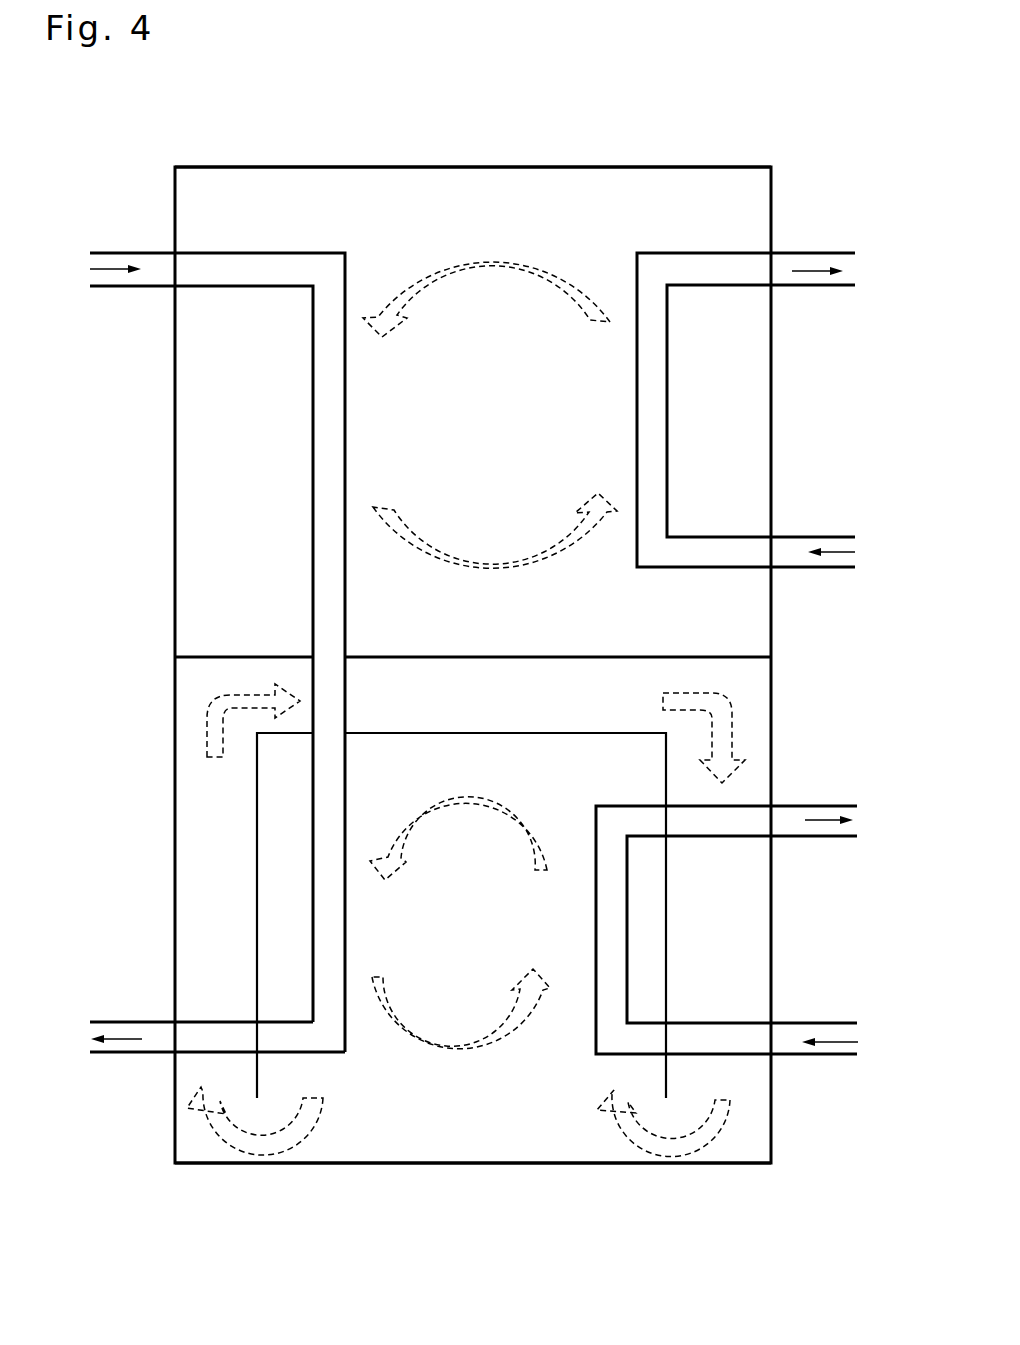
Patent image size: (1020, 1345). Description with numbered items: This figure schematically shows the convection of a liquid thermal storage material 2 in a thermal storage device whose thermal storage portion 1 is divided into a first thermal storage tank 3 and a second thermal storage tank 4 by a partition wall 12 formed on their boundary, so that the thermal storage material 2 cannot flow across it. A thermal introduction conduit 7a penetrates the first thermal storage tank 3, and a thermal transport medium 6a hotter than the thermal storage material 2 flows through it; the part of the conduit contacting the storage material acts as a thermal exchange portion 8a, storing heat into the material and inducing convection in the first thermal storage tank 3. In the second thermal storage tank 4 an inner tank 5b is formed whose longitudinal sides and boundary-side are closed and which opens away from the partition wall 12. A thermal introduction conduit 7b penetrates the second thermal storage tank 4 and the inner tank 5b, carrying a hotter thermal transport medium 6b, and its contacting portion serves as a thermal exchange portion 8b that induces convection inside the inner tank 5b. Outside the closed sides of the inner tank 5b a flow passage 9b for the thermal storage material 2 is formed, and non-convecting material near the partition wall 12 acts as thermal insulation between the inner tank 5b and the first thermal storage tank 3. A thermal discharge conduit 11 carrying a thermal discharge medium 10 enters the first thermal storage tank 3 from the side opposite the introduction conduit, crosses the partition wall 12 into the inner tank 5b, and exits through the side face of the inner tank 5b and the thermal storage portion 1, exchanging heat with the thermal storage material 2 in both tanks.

The thermal storage portion 1 is at (346, 160).
The thermal storage material 2 is at (480, 188).
The first thermal storage tank 3 is at (668, 188).
The second thermal storage tank 4 is at (460, 1143).
The partition wall 12 is at (660, 657).
The thermal discharge medium 10 is at (122, 257).
The thermal discharge conduit 11 is at (152, 1053).
The flow passage 9b is at (210, 880).
The inner tank 5b is at (283, 918).
The thermal transport medium 6a is at (813, 272).
The thermal introduction conduit 7a is at (797, 537).
The thermal exchange portion 8a is at (667, 397).
The thermal transport medium 6b is at (833, 820).
The thermal introduction conduit 7b is at (797, 1055).
The thermal exchange portion 8b is at (627, 925).